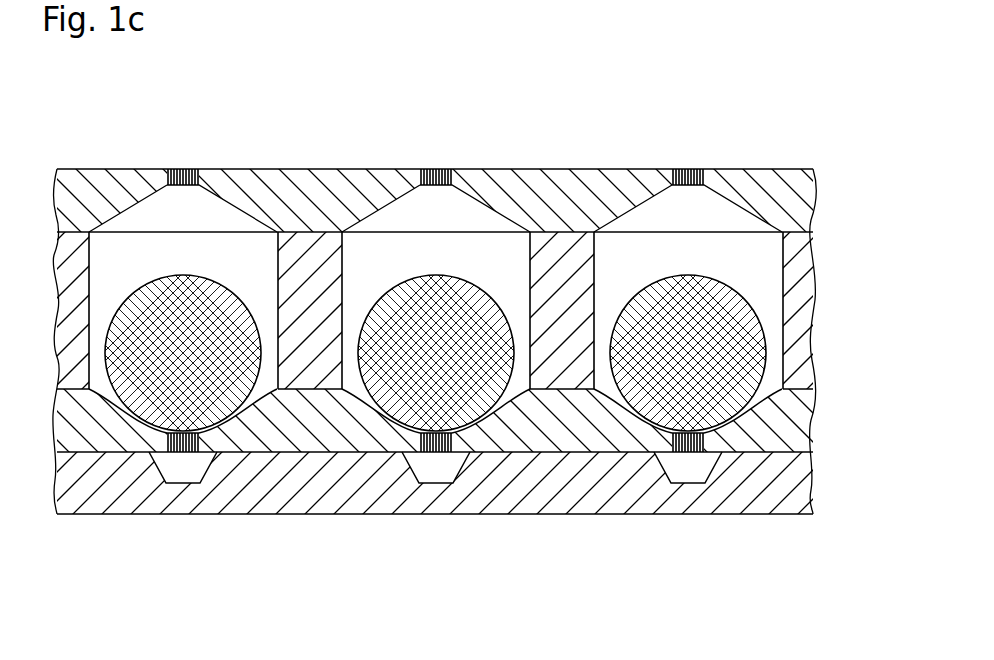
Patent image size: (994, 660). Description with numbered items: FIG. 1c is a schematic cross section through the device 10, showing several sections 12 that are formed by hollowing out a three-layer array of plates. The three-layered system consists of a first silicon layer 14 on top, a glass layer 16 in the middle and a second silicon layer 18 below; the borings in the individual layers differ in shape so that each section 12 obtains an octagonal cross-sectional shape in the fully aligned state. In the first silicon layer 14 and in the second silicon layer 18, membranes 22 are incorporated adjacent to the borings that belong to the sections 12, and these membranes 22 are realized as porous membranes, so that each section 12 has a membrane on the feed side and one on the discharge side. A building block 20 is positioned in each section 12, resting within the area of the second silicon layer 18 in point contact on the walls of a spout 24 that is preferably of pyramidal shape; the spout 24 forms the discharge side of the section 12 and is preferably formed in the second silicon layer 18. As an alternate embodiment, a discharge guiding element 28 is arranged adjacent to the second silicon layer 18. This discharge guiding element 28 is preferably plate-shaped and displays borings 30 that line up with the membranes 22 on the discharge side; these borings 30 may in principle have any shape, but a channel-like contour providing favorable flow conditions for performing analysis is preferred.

The device 10 is at (560, 82).
The section 12 is at (700, 253).
The first silicon layer 14 is at (799, 199).
The glass layer 16 is at (798, 297).
The second silicon layer 18 is at (799, 428).
The building block 20 is at (722, 397).
The membrane 22 is at (433, 169).
The spout 24 is at (117, 402).
The discharge guiding element 28 is at (799, 493).
The boring 30 is at (197, 499).